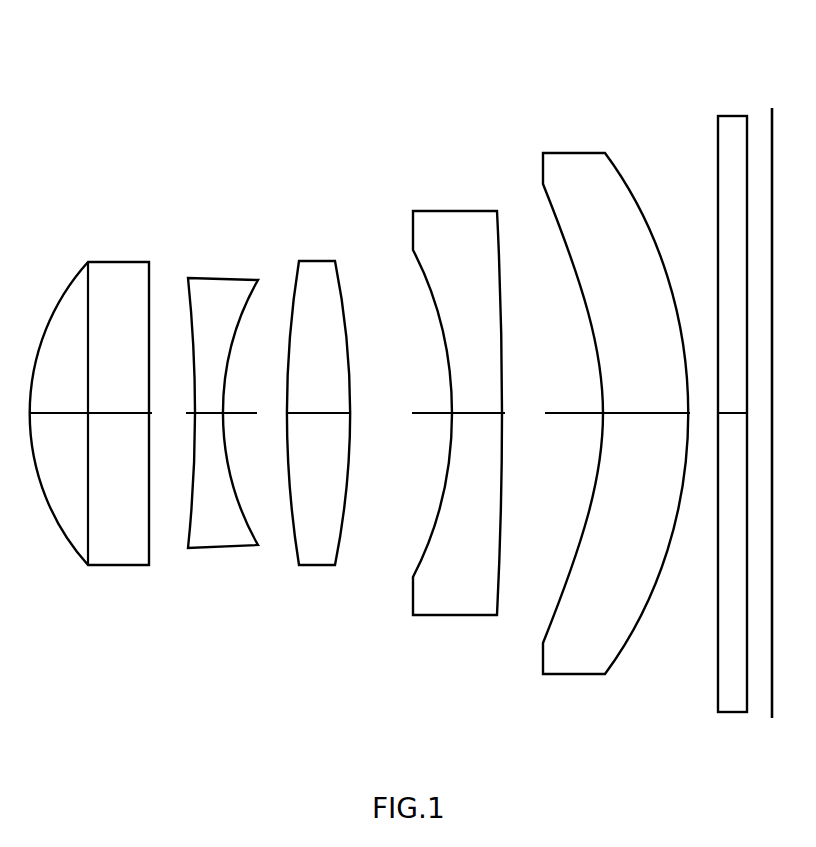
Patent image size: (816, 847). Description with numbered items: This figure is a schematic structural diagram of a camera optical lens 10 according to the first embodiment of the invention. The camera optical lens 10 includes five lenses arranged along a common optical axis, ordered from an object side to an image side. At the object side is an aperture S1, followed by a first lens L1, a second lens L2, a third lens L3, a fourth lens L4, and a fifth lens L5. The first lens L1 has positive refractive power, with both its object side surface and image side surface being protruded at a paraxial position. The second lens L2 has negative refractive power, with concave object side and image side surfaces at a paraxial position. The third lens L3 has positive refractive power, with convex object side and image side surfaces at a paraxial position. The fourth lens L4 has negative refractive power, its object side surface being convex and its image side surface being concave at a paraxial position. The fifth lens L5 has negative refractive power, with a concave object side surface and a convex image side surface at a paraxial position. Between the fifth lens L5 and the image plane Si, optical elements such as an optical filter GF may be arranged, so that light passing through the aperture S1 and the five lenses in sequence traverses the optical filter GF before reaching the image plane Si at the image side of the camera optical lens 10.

The camera optical lens 10 is at (397, 57).
The aperture S1 is at (86, 401).
The first lens L1 is at (91, 401).
The second lens L2 is at (222, 400).
The third lens L3 is at (318, 399).
The fourth lens L4 is at (458, 401).
The fifth lens L5 is at (616, 401).
The optical filter GF is at (732, 400).
The image plane Si is at (771, 399).